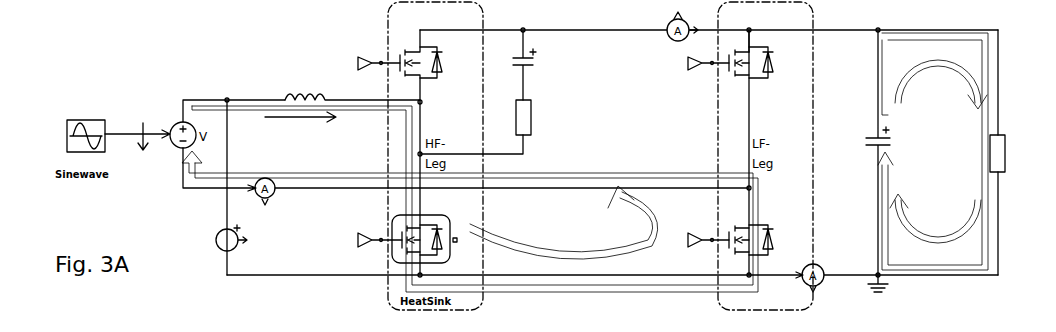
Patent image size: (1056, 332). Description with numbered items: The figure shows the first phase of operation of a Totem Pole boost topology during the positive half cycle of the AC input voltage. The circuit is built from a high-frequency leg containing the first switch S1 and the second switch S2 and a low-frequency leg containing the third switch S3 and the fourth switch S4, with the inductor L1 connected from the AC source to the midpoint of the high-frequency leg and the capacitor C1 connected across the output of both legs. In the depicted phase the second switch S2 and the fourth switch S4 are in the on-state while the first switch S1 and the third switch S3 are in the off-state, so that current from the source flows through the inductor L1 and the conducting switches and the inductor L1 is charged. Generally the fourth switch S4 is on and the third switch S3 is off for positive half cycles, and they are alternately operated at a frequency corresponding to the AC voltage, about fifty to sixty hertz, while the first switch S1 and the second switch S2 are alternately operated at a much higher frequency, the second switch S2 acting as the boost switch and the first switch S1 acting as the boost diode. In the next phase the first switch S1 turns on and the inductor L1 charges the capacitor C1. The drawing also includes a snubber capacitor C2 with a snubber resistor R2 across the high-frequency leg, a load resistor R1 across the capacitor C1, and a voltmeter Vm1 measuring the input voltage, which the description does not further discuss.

The inductor L1 is at (352, 90).
The capacitor C1 is at (868, 152).
The snubber capacitor C2 is at (513, 65).
The load resistor R1 is at (1009, 152).
The snubber resistor R2 is at (535, 117).
The first switch S1 is at (404, 66).
The second switch S2 is at (407, 232).
The third switch S3 is at (719, 56).
The fourth switch S4 is at (725, 233).
The voltmeter Vm1 is at (212, 238).